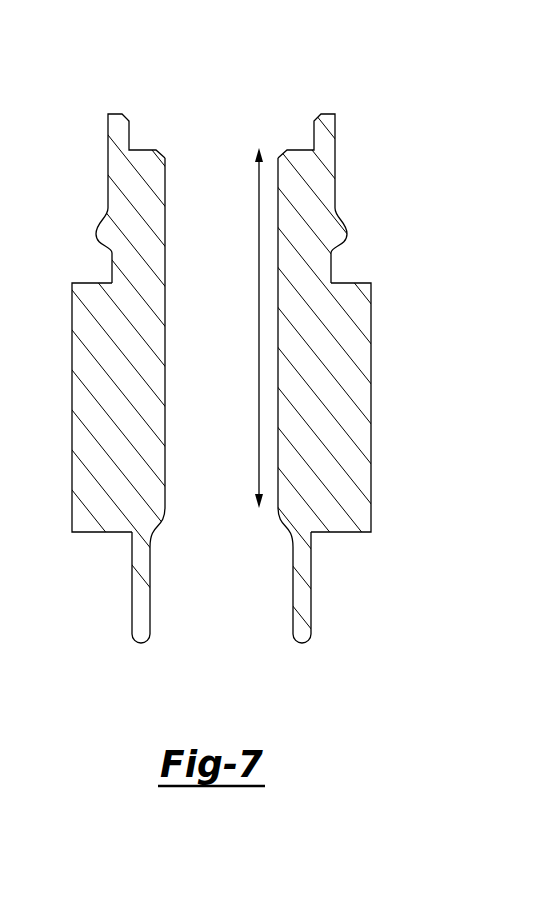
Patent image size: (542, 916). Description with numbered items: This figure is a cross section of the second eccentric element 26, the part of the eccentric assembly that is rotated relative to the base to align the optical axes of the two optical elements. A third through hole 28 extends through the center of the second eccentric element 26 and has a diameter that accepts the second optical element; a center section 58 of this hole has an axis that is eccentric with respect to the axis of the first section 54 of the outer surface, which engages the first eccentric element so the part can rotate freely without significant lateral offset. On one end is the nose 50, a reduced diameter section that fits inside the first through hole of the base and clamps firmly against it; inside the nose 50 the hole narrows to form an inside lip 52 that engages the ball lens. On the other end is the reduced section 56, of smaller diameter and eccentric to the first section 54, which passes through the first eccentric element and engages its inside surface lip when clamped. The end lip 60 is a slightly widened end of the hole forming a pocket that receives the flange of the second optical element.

The second eccentric element 26 is at (271, 370).
The third through hole 28 is at (236, 358).
The nose 50 is at (140, 645).
The inside lip 52 is at (285, 532).
The first section 54 is at (72, 357).
The reduced section 56 is at (112, 270).
The center section 58 is at (259, 270).
The end lip 60 is at (113, 113).